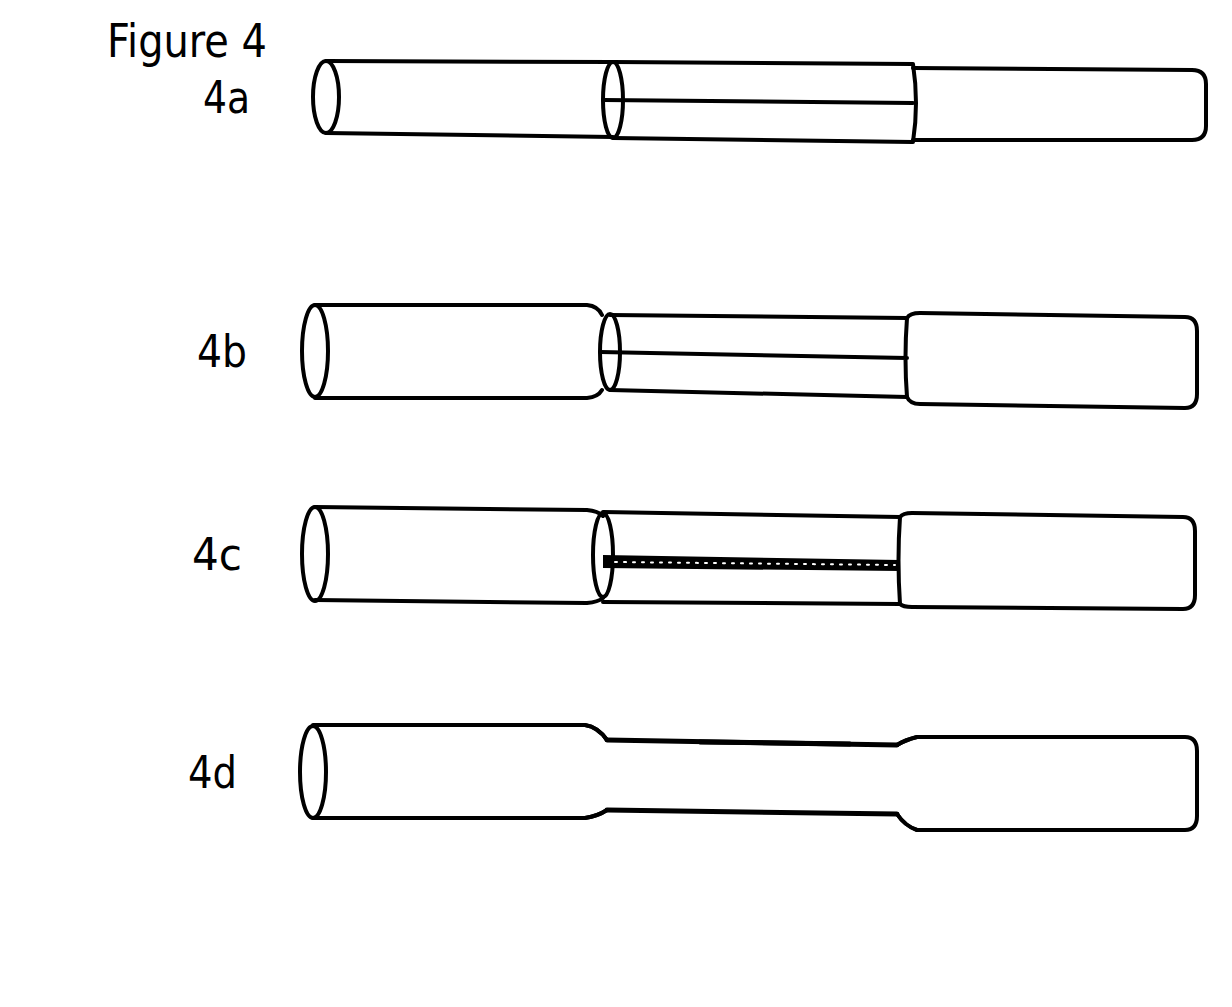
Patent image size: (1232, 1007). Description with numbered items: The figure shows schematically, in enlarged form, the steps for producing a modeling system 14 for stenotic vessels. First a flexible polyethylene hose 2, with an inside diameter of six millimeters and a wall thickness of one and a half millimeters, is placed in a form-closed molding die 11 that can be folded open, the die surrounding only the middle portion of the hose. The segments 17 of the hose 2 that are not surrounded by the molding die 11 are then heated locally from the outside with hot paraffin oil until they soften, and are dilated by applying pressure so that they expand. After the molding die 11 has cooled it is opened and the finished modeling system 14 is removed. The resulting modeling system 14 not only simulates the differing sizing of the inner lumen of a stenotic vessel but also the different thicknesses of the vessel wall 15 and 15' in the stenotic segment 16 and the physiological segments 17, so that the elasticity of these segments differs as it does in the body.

The flexible polyethylene hose 2 is at (1107, 110).
The molding die 11 is at (755, 122).
The modeling system for stenotic vessels 14 is at (1183, 685).
The vessel wall 15 is at (1047, 816).
The vessel wall 15' is at (796, 709).
The stenotic segment 16 is at (887, 847).
The physiological segments 17 is at (593, 265).